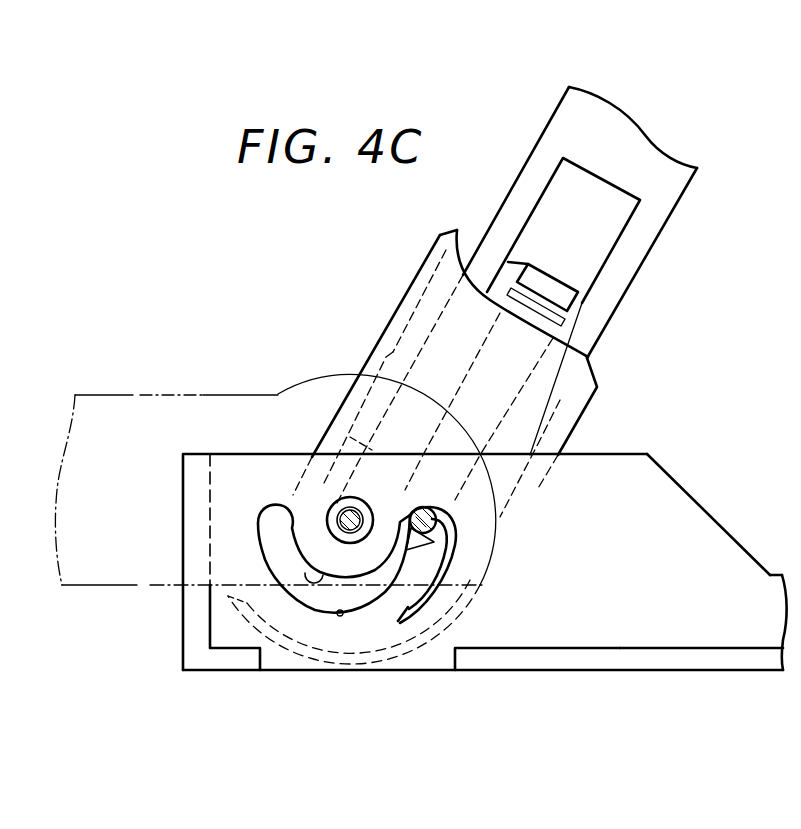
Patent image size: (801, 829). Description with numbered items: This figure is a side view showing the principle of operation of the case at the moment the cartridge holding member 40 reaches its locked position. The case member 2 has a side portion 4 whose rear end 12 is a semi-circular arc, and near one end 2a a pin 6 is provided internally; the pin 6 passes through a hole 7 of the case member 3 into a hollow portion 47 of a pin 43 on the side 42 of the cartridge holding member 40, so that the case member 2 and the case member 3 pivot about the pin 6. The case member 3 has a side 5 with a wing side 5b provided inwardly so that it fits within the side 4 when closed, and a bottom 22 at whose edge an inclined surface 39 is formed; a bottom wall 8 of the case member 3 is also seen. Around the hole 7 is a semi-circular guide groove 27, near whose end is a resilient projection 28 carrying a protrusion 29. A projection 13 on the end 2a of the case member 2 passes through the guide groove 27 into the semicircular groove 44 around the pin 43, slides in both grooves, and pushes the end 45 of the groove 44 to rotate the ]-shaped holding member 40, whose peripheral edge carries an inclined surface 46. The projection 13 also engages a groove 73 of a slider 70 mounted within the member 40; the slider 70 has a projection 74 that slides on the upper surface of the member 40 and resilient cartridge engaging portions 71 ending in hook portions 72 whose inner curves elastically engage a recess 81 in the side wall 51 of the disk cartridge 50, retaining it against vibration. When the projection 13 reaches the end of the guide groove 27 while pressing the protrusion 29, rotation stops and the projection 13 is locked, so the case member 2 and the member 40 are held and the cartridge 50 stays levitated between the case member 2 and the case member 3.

The case member 2 is at (90, 588).
The one end of the case member 2a is at (440, 392).
The case member 3 is at (637, 670).
The side portion of the case member 4 is at (130, 420).
The side of the case member 5 is at (753, 657).
The side on one wing of the side wall 5b is at (693, 530).
The pin 6 is at (330, 506).
The hole of the case member 7 is at (327, 520).
The bottom wall of housing 8 is at (137, 588).
The rear end of the side portion 12 is at (325, 388).
The projection 13 is at (497, 506).
The bottom of the case member 22 is at (677, 642).
The guide groove 27 is at (273, 556).
The resilient projection 28 is at (458, 565).
The protrusion 29 is at (445, 552).
The inclined surface 39 is at (603, 652).
The cartridge holding member 40 is at (410, 287).
The side of the cartridge holding member 42 is at (412, 321).
The pin of the cartridge holding member 43 is at (338, 540).
The groove 44 is at (347, 620).
The end of the groove 45 is at (330, 447).
The inclined surface 46 is at (578, 392).
The hollow portion of the pin 47 is at (333, 513).
The disk cartridge 50 is at (681, 196).
The side wall of the disk cartridge 51 is at (640, 240).
The slider 70 is at (411, 553).
The cartridge engaging portion 71 is at (553, 325).
The hook portion 72 is at (560, 306).
The groove of the slider 73 is at (465, 522).
The projection of the slider 74 is at (383, 370).
The recess of the side wall 81 is at (506, 260).